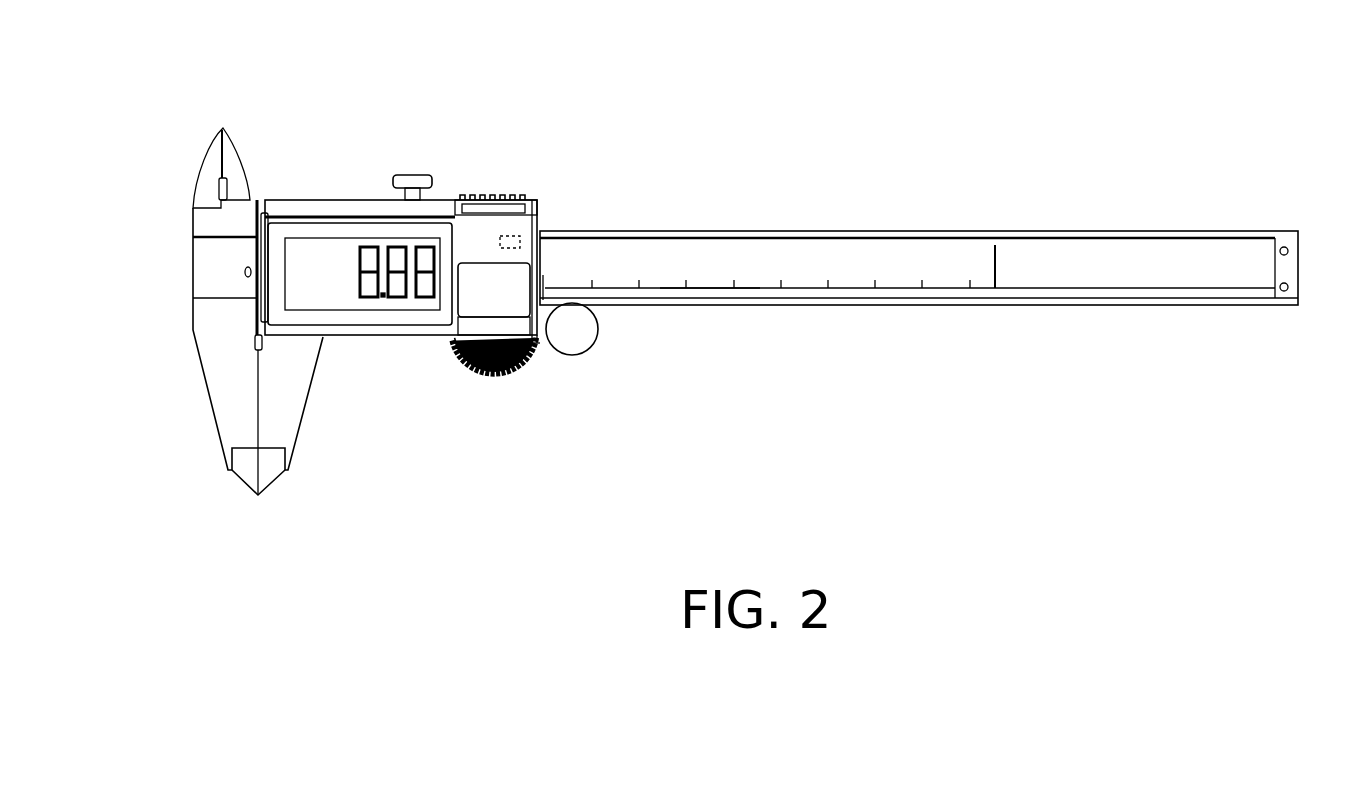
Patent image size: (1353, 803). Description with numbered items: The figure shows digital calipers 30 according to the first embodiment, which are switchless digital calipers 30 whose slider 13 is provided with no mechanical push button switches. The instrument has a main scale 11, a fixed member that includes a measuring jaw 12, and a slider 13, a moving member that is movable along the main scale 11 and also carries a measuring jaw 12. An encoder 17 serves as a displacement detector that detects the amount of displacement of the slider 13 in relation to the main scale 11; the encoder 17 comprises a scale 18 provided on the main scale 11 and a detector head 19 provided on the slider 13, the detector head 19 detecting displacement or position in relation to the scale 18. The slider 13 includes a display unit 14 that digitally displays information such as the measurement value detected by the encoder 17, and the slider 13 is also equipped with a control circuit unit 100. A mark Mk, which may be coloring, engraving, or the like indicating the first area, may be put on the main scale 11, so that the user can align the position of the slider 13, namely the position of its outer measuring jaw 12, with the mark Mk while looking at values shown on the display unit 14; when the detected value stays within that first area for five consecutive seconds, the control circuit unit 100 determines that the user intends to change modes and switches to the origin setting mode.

The digital calipers 30 is at (1004, 118).
The main scale 11 is at (1038, 257).
The measuring jaw 12 is at (208, 168).
The slider 13 is at (487, 232).
The display unit 14 is at (327, 250).
The encoder 17 is at (620, 468).
The scale 18 is at (700, 277).
The detector head 19 is at (500, 298).
The control circuit unit 100 is at (510, 242).
The mark Mk is at (995, 270).